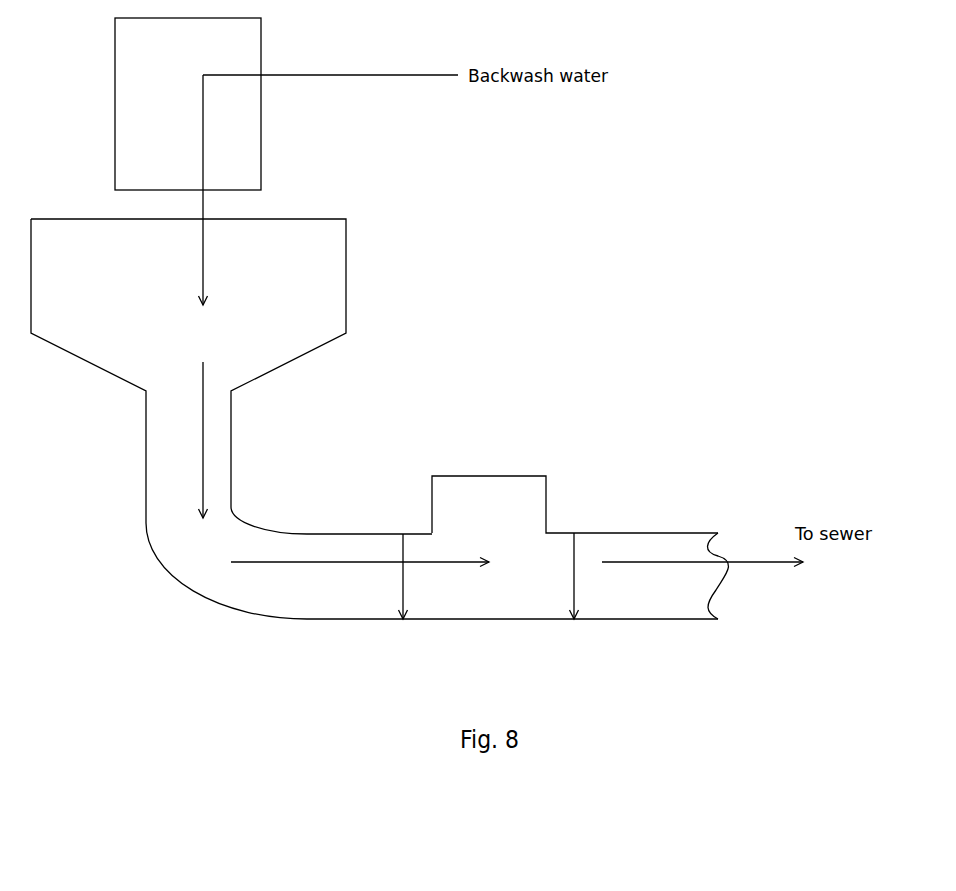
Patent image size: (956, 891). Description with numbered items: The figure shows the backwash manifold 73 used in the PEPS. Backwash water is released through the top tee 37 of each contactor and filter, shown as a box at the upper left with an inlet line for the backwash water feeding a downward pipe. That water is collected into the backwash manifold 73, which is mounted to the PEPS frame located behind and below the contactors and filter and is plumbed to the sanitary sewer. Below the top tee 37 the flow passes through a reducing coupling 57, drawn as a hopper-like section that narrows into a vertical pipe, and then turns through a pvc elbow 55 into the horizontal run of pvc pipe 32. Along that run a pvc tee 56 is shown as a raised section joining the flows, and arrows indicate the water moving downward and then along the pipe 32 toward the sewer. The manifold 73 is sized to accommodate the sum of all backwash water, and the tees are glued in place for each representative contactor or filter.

The top tee 37 is at (261, 133).
The reducing coupling 57 is at (317, 277).
The pvc elbow 55 is at (233, 504).
The pvc tee 56 is at (546, 476).
The backwash manifold 73 is at (182, 534).
The pvc pipe 32 is at (603, 620).